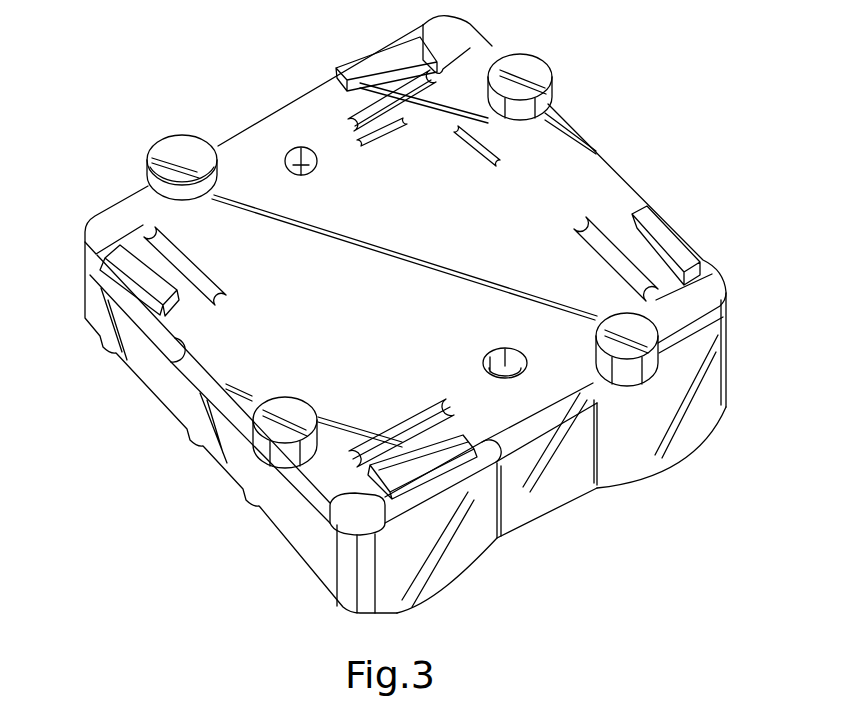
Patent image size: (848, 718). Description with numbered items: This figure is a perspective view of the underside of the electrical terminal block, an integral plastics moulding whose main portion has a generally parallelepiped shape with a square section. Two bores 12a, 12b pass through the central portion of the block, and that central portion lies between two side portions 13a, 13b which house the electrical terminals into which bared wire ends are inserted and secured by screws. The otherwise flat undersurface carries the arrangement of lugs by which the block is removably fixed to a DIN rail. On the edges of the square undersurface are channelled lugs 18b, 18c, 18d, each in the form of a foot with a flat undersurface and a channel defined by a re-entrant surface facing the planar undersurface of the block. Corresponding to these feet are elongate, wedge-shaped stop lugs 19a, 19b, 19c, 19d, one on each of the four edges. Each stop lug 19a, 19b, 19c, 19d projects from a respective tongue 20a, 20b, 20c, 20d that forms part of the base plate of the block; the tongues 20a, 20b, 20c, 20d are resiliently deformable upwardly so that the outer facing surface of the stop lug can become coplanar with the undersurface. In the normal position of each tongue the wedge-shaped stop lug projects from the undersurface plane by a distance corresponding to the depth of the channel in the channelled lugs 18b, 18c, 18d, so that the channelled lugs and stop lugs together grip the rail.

The bore 12a is at (310, 162).
The bore 12b is at (498, 353).
The side portion 13a is at (678, 450).
The side portion 13b is at (447, 578).
The channelled lug 18b is at (287, 417).
The channelled lug 18c is at (186, 140).
The channelled lug 18d is at (517, 80).
The stop lug 19a is at (440, 440).
The stop lug 19b is at (173, 295).
The stop lug 19c is at (367, 59).
The stop lug 19d is at (673, 243).
The tongue 20a is at (347, 480).
The tongue 20b is at (157, 267).
The tongue 20c is at (405, 70).
The tongue 20d is at (640, 237).